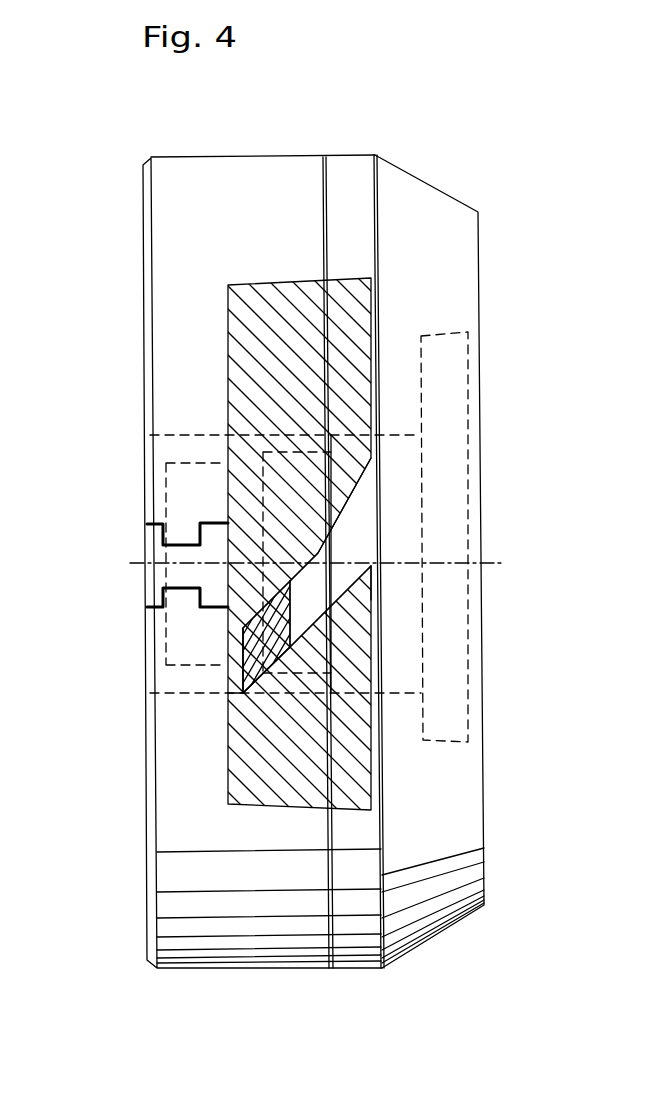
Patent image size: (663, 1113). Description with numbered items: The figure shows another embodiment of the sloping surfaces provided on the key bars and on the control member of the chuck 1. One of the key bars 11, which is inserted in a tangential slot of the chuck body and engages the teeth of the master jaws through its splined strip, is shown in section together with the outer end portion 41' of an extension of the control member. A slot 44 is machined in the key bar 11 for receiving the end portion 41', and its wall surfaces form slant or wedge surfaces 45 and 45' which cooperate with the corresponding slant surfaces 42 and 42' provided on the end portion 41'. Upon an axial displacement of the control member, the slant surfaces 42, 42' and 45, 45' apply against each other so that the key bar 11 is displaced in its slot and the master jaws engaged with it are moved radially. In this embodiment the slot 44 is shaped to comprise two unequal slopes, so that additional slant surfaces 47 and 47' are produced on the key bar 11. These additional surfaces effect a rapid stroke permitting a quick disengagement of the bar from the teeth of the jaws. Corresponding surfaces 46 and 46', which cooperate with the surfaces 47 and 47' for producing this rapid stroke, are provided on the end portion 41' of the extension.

The chuck 1 is at (128, 989).
The key bar 11 is at (243, 364).
The outer portion of extension 41' is at (186, 674).
The slant surface 42 is at (178, 605).
The slant surface 42' is at (185, 716).
The slot 44 is at (310, 632).
The slant surface 45 is at (197, 553).
The slant surface 45' is at (418, 618).
The corresponding surface 46 is at (170, 660).
The corresponding surface 46' is at (421, 629).
The additional slant surface 47 is at (419, 519).
The additional slant surface 47' is at (420, 586).